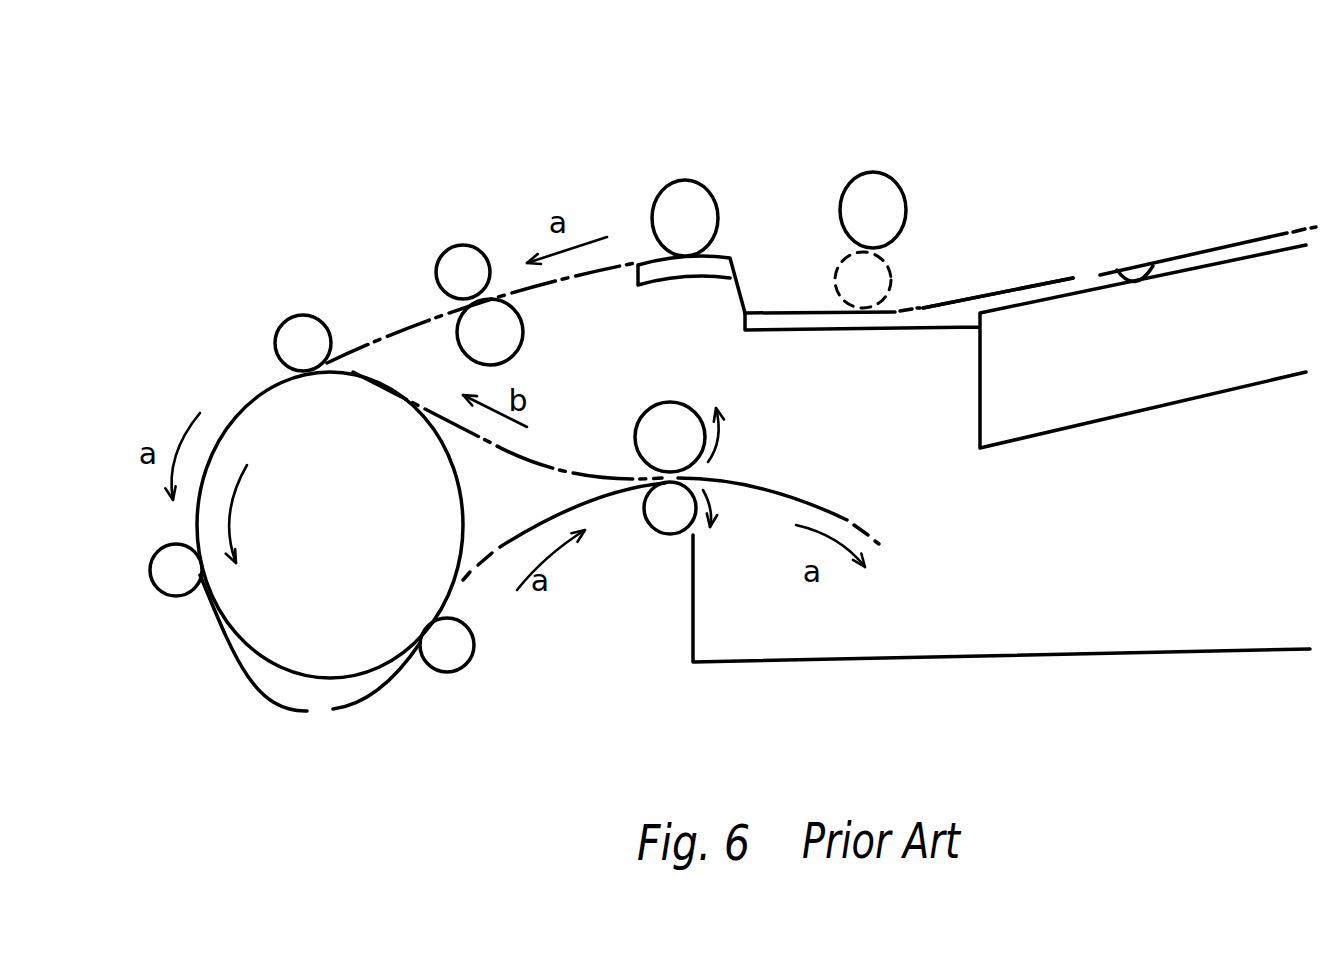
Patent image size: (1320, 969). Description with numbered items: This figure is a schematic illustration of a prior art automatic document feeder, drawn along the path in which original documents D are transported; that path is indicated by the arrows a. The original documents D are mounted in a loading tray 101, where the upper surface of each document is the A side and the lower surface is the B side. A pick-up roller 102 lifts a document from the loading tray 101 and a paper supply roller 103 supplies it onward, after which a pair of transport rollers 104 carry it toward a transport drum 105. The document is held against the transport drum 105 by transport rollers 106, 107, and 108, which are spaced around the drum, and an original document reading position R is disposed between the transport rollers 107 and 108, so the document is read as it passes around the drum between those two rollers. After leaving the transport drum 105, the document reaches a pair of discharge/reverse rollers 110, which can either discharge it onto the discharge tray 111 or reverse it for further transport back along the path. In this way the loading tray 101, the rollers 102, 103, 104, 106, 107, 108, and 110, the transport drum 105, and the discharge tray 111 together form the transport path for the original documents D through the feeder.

The loading tray 101 is at (1017, 306).
The pick-up roller 102 is at (872, 173).
The paper supply roller 103 is at (686, 181).
The pair of transport rollers 104 is at (445, 252).
The transport drum 105 is at (251, 398).
The transport roller 106 is at (293, 318).
The transport roller 107 is at (150, 573).
The transport roller 108 is at (473, 650).
The pair of discharge/reverse rollers 110 is at (650, 404).
The discharge tray 111 is at (1035, 655).
The A side A is at (1080, 276).
The B side B is at (1157, 263).
The original documents D is at (1178, 193).
The original document reading position R is at (325, 714).